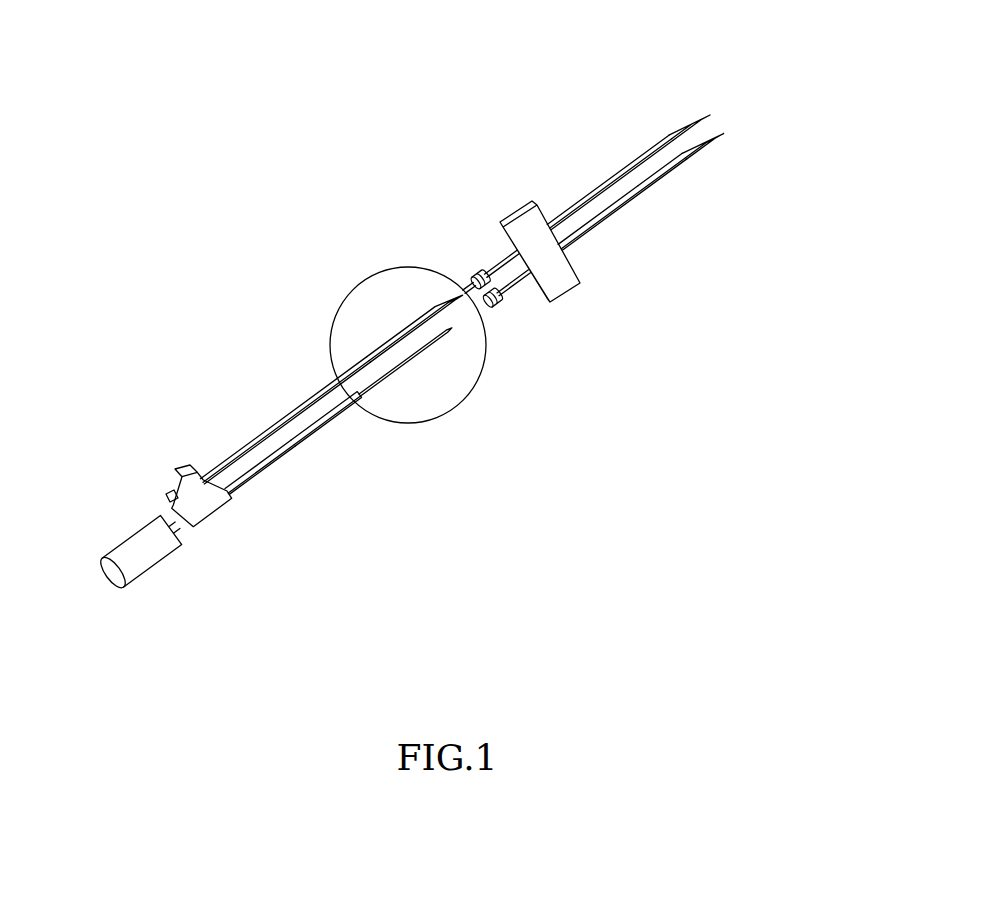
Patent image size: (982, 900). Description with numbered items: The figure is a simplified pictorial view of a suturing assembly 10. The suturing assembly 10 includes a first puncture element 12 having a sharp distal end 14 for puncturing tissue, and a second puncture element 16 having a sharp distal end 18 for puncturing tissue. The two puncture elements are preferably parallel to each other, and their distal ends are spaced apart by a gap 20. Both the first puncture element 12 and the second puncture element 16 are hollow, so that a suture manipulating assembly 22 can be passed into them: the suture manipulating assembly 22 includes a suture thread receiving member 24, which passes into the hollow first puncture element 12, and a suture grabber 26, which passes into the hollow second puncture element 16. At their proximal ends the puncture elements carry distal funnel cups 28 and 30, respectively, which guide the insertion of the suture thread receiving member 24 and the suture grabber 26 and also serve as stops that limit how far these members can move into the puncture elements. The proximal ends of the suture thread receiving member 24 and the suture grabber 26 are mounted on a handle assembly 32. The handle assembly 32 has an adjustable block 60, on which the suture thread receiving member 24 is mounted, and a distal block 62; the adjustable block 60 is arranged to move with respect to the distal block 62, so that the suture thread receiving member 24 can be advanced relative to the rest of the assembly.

The suturing assembly 10 is at (657, 352).
The first puncture element 12 is at (642, 200).
The sharp distal end 14 is at (723, 137).
The second puncture element 16 is at (645, 153).
The sharp distal end 18 is at (708, 112).
The gap 20 is at (706, 128).
The suture manipulating assembly 22 is at (328, 505).
The suture thread receiving member 24 is at (393, 377).
The suture grabber 26 is at (447, 290).
The distal funnel cup 28 is at (494, 310).
The distal funnel cup 30 is at (476, 268).
The handle assembly 32 is at (161, 503).
The adjustable block 60 is at (150, 556).
The distal block 62 is at (203, 506).